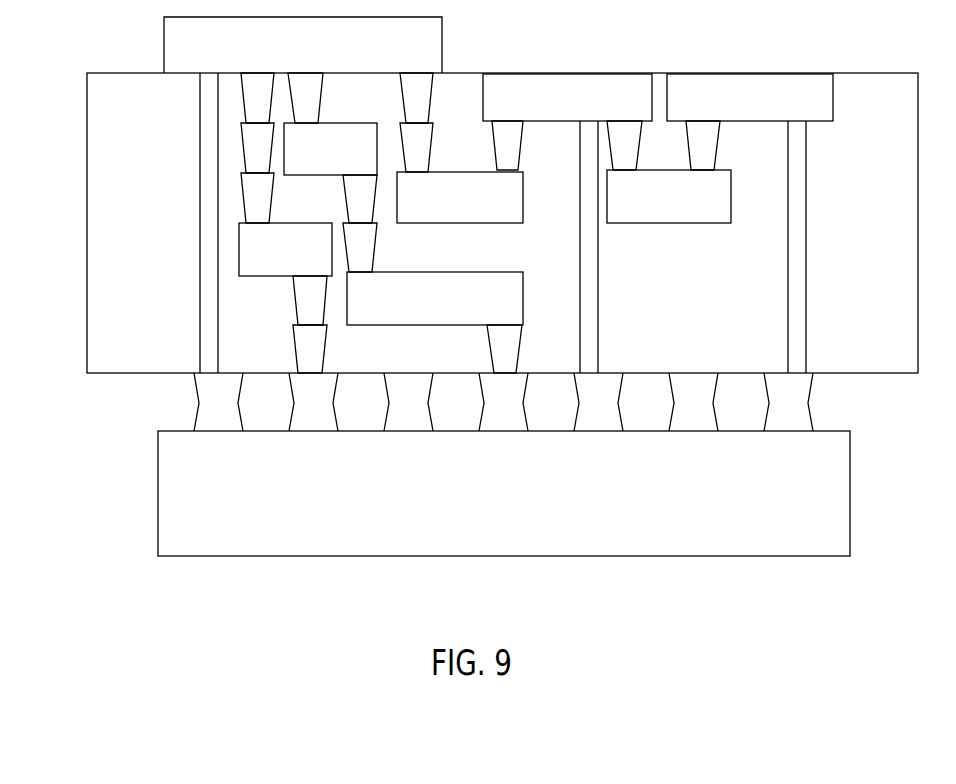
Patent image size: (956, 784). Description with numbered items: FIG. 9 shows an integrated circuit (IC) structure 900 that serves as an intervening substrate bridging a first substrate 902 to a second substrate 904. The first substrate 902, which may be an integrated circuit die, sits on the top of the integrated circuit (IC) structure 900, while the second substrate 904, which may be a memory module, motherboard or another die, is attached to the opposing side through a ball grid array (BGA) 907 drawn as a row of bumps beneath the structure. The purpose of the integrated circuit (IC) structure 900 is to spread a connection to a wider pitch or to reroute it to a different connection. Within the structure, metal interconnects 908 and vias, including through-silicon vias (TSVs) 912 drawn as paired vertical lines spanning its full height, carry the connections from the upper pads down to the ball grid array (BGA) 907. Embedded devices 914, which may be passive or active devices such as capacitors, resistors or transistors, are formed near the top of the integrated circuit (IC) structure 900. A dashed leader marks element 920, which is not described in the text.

The integrated circuit (IC) structure 900 is at (854, 282).
The first substrate 902 is at (293, 58).
The second substrate 904 is at (491, 505).
The ball grid array (BGA) 907 is at (218, 405).
The metal interconnects 908 is at (312, 161).
The through-silicon vias (TSVs) 912 is at (206, 325).
The embedded devices 914 is at (549, 110).
The via / conductive pillar 920 is at (243, 150).